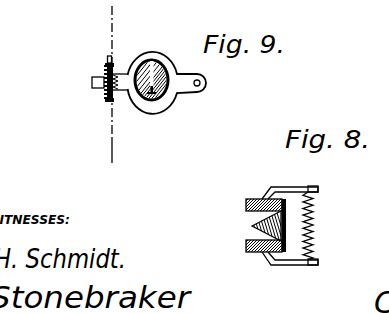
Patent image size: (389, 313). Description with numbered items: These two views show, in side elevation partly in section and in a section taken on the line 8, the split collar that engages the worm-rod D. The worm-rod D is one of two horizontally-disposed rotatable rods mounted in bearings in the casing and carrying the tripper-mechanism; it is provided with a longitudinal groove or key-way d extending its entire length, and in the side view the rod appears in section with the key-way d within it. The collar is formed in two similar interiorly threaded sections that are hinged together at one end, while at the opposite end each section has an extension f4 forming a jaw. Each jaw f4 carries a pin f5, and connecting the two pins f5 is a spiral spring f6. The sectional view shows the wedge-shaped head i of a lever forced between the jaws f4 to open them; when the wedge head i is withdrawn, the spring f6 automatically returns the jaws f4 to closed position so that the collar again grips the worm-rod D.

In FIG. 9, the section line 8— 8 is at (110, 91).
In FIG. 9, the worm-rod D is at (166, 101).
In FIG. 9, the longitudinal groove or key-way d is at (156, 64).
In FIG. 8, the wedge-shaped head i is at (252, 227).
In FIG. 9, the extension forming a jaw f4 is at (113, 67).
In FIG. 8, the extension forming a jaw f4 is at (240, 257).
In FIG. 8, the pin f5 is at (314, 188).
In FIG. 9, the spiral spring f6 is at (107, 78).
In FIG. 8, the spiral spring f6 is at (311, 214).